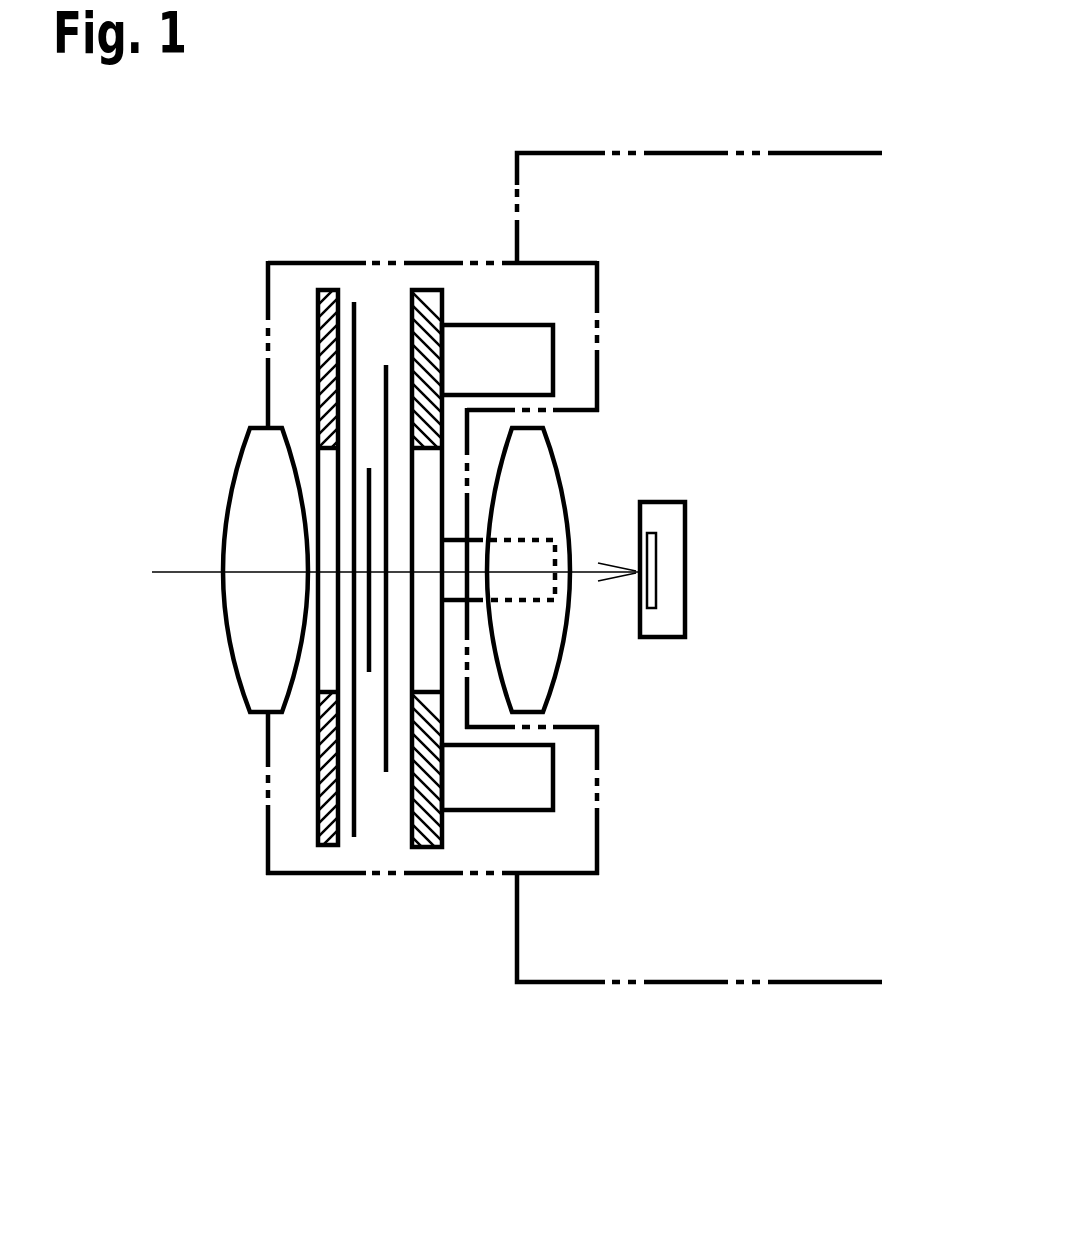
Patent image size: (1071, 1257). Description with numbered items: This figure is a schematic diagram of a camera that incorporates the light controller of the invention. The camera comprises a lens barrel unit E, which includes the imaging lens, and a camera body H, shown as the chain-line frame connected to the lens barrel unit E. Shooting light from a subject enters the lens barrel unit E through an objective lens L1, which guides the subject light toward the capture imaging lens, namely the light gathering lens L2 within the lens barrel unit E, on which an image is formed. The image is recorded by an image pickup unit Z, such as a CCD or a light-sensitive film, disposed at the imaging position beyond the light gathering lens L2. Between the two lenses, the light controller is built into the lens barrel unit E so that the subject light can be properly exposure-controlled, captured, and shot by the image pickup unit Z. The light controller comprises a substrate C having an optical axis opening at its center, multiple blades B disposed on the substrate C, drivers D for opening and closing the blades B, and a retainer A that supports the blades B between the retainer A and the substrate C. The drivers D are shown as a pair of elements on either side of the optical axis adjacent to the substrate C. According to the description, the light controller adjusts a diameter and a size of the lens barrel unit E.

The lens barrel unit E is at (323, 263).
The objective lens L1 is at (233, 483).
The light gathering lens L2 is at (558, 487).
The retainer A is at (318, 802).
The blades B is at (373, 803).
The substrate C is at (418, 847).
The drivers D is at (498, 788).
The image pickup unit Z is at (685, 572).
The camera body H is at (762, 918).